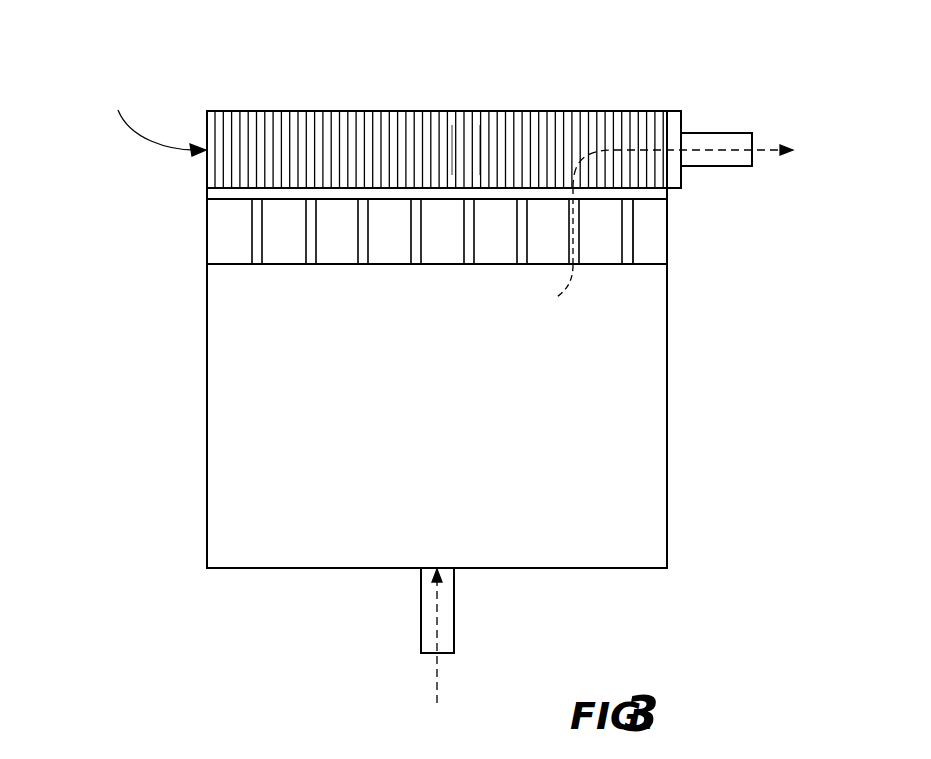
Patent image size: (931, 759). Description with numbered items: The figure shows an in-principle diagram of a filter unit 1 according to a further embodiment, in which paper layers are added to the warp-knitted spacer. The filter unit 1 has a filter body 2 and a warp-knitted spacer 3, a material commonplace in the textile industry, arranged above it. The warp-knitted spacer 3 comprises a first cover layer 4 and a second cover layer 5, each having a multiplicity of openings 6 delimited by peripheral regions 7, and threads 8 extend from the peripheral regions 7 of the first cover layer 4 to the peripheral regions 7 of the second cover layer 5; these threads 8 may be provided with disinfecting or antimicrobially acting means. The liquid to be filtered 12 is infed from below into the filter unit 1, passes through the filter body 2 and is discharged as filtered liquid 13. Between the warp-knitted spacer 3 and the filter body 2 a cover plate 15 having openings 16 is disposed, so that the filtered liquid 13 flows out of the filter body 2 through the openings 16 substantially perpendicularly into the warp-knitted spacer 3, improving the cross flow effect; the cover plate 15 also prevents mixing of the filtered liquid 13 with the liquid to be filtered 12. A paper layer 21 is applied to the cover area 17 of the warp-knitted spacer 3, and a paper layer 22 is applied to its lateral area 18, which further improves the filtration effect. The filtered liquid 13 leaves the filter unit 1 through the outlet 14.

The filter unit 1 is at (118, 306).
The filter body 2 is at (662, 411).
The warp-knitted spacer 3 is at (159, 121).
The first cover layer 4 is at (256, 110).
The second cover layer 5 is at (238, 190).
The openings 6 is at (303, 190).
The peripheral regions 7 is at (340, 110).
The threads 8 is at (452, 130).
The liquid to be filtered 12 is at (440, 670).
The filtered liquid 13 is at (718, 147).
The outlet pipe 14 is at (742, 168).
The cover plate 15 is at (658, 240).
The openings 16 is at (310, 255).
The cover area 17 is at (260, 194).
The lateral area 18 is at (670, 128).
The paper layer 21 is at (217, 195).
The paper layer 22 is at (668, 128).